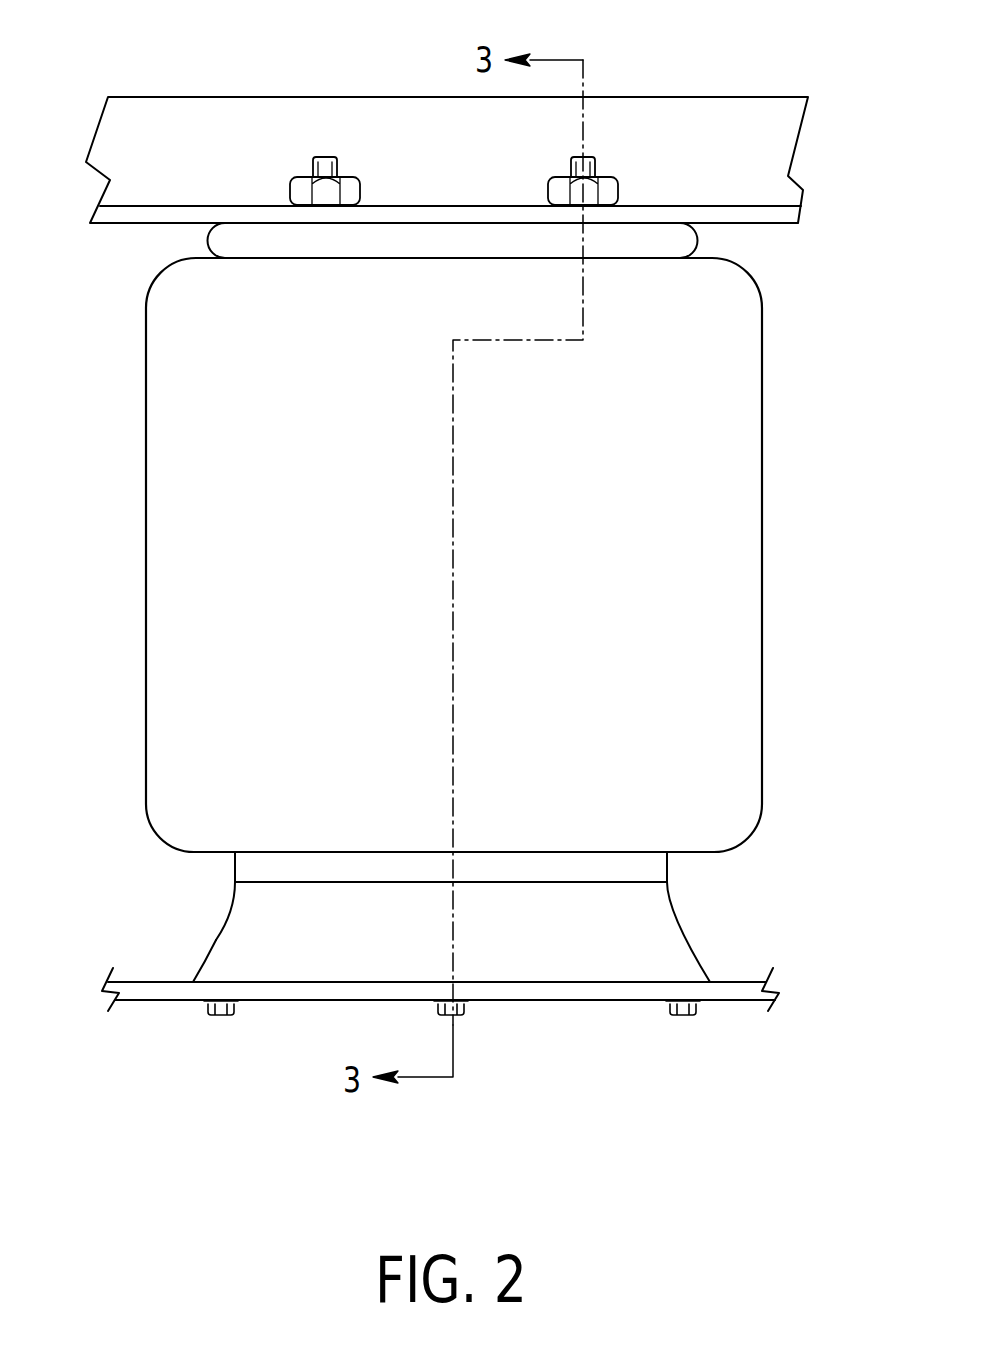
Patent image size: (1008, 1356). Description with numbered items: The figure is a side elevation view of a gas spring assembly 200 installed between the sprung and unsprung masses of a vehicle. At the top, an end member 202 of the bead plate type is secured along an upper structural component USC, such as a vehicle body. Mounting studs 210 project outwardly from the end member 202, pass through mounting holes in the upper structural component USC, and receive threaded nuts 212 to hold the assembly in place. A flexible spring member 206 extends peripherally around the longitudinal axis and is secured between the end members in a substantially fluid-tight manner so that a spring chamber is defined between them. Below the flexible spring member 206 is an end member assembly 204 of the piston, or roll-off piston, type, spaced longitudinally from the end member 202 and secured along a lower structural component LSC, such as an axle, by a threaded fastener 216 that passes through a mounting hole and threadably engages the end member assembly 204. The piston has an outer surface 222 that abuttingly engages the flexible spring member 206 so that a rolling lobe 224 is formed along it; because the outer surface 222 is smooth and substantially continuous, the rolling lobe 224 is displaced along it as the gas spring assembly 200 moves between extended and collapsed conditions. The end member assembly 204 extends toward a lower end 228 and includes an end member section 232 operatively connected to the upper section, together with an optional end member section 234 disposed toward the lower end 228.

The gas spring assembly 200 is at (790, 252).
The end member 202 is at (669, 226).
The end member assembly 204 is at (706, 914).
The flexible spring member 206 is at (770, 545).
The mounting studs 210 is at (338, 175).
The threaded nuts 212 is at (352, 193).
The threaded fastener 216 is at (222, 1016).
The outer surface 222 is at (222, 905).
The rolling lobe 224 is at (190, 857).
The lower end 228 is at (190, 946).
The end member section 232 is at (676, 872).
The end member section 234 is at (703, 952).
The upper structural component USC is at (200, 122).
The lower structural component LSC is at (145, 993).